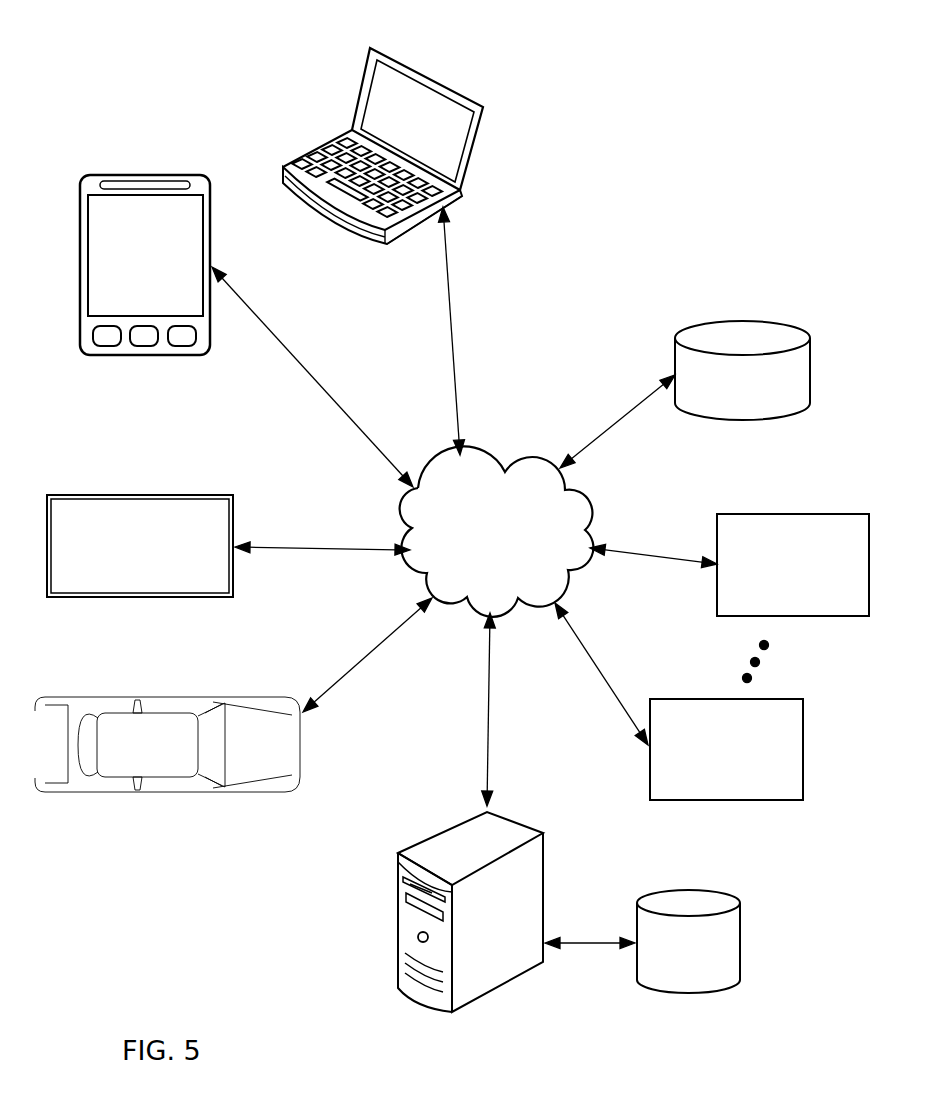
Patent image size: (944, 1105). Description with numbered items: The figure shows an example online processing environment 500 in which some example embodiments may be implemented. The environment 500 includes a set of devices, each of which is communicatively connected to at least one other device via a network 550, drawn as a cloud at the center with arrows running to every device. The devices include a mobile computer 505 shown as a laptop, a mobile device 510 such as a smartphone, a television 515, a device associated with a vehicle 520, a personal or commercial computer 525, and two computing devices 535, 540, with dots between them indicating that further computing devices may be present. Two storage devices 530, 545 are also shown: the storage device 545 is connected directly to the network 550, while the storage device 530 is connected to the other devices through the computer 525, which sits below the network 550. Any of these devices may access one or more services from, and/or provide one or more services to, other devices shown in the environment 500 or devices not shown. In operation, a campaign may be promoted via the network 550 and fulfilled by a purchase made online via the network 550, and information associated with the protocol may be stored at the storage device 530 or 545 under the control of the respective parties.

The environment 500 is at (162, 44).
The mobile computer 505 is at (383, 251).
The mobile device 510 is at (246, 331).
The television 515 is at (228, 546).
The device associated with a vehicle 520 is at (233, 695).
The computer 525 is at (470, 812).
The storage device 530 is at (642, 941).
The computing device 535 is at (679, 701).
The computing device 540 is at (729, 598).
The storage device 545 is at (685, 394).
The network 550 is at (497, 531).